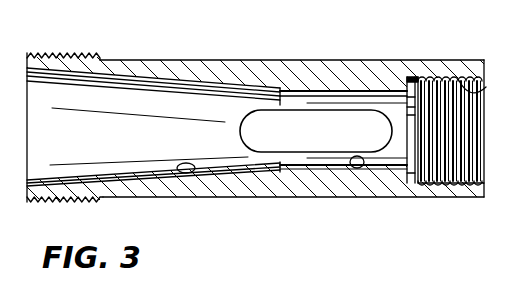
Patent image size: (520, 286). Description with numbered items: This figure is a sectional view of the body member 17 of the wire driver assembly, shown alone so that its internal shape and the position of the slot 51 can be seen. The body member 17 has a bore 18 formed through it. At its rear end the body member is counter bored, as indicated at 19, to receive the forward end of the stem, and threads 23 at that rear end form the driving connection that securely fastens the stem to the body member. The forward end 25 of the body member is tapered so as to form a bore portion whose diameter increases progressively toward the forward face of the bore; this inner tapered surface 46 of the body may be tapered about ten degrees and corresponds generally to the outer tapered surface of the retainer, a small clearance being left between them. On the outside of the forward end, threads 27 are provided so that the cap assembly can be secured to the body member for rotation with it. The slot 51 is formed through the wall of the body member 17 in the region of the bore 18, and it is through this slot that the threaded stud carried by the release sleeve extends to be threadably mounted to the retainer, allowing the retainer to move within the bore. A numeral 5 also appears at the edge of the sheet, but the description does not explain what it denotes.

The device 5 is at (513, 159).
The body 17 is at (250, 72).
The seal ring 18 is at (357, 168).
The threaded insert 19 is at (437, 78).
The thread 23 is at (486, 88).
The tapered bore 25 is at (125, 65).
The serrated grip 27 is at (82, 38).
The seal ring 46 is at (182, 174).
The slot 51 is at (306, 116).